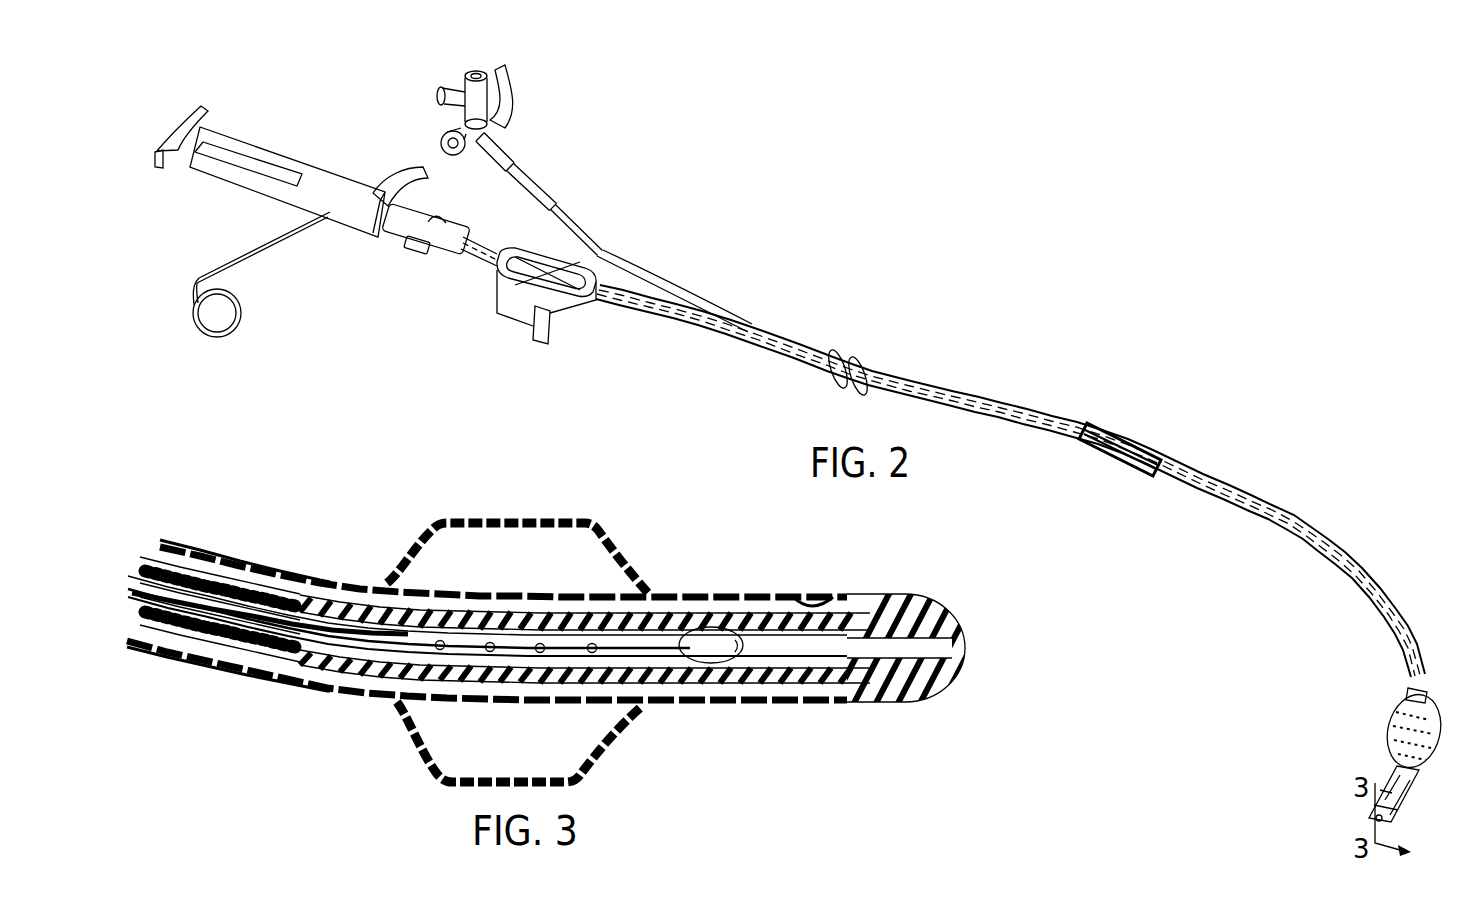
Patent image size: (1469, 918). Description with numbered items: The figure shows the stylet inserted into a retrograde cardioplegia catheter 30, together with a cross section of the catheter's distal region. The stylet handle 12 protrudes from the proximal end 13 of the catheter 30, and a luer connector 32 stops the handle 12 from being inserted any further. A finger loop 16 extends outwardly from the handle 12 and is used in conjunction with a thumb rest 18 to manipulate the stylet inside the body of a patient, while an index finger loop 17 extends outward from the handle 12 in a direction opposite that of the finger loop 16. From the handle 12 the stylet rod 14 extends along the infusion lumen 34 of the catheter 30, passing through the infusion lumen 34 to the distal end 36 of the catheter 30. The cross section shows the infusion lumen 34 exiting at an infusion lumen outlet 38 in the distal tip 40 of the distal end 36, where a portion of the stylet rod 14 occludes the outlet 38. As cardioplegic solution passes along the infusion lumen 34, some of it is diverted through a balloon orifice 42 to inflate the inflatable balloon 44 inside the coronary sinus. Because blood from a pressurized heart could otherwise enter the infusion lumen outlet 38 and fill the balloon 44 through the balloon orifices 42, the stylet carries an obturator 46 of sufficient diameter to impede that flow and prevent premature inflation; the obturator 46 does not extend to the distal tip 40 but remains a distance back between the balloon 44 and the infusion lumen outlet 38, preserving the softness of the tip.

In FIG. 2, the handle 12 is at (317, 183).
In FIG. 2, the proximal end 13 is at (483, 237).
In FIG. 2, the stylet rod 14 is at (1117, 452).
In FIG. 3, the stylet rod 14 is at (305, 630).
In FIG. 2, the finger loop 16 is at (246, 318).
In FIG. 2, the index finger loop 17 is at (428, 193).
In FIG. 2, the thumb rest 18 is at (196, 136).
In FIG. 2, the retrograde cardioplegia catheter 30 is at (1031, 395).
In FIG. 2, the luer connector 32 is at (400, 229).
In FIG. 3, the infusion lumen 34 is at (270, 648).
In FIG. 2, the distal end 36 is at (1427, 690).
In FIG. 3, the distal end 36 is at (227, 680).
In FIG. 2, the infusion lumen outlet 38 is at (1374, 812).
In FIG. 3, the infusion lumen outlet 38 is at (950, 648).
In FIG. 2, the distal tip 40 is at (1395, 819).
In FIG. 3, the distal tip 40 is at (915, 702).
In FIG. 3, the balloon orifice 42 is at (440, 650).
In FIG. 3, the inflatable balloon 44 is at (535, 521).
In FIG. 3, the obturator 46 is at (722, 656).